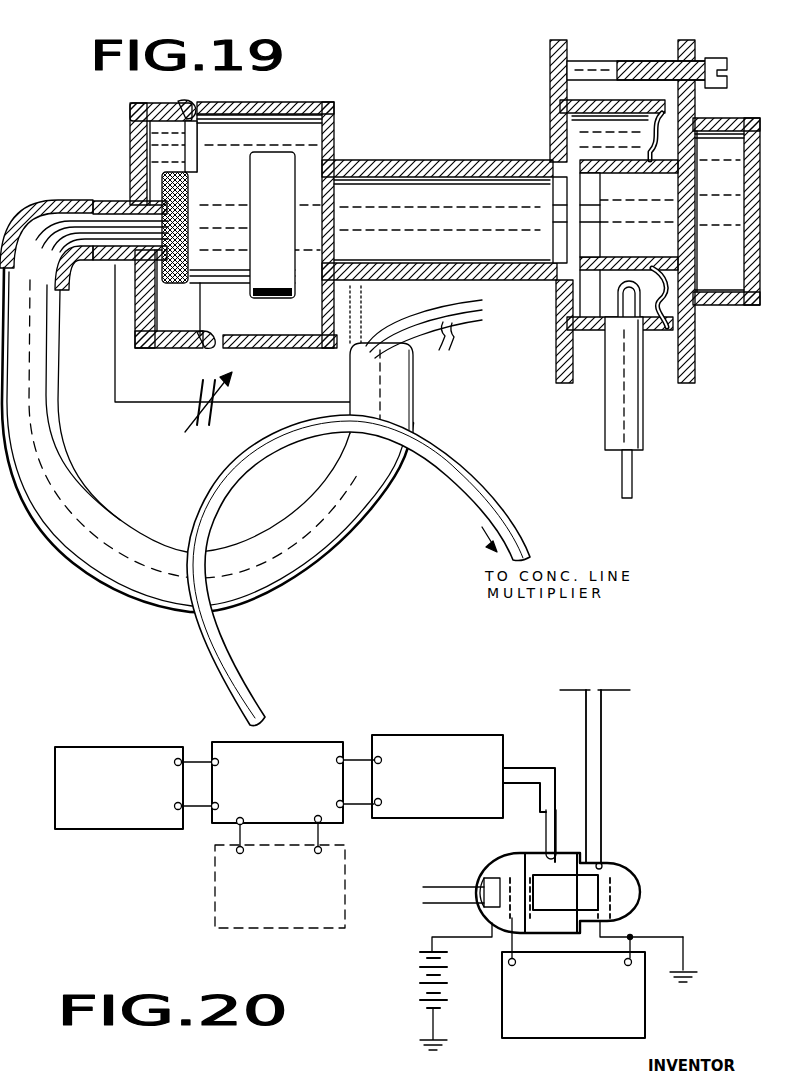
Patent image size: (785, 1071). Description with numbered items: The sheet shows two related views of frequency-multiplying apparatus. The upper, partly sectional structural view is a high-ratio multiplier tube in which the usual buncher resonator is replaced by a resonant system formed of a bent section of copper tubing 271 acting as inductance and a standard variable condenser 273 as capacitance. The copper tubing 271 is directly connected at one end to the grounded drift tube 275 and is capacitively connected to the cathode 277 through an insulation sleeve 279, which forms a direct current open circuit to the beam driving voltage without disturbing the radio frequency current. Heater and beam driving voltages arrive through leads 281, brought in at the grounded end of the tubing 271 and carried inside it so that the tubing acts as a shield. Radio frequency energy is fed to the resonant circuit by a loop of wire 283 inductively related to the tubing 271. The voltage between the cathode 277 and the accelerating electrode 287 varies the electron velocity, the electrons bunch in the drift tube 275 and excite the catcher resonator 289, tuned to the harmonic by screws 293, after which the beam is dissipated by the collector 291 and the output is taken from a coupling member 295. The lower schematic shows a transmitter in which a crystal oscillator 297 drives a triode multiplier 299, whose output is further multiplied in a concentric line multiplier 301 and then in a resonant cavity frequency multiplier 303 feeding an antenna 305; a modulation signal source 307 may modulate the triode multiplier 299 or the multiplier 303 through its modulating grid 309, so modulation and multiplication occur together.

In FIG. 19, the copper tubing 271 is at (88, 555).
In FIG. 19, the variable condenser 273 is at (197, 405).
In FIG. 19, the drift tube 275 is at (391, 158).
In FIG. 19, the cathode 277 is at (277, 148).
In FIG. 19, the insulation sleeve 279 is at (84, 223).
In FIG. 19, the leads 281 is at (424, 335).
In FIG. 19, the loop of wire 283 is at (217, 643).
In FIG. 19, the accelerating electrode 287 is at (335, 112).
In FIG. 19, the catcher resonator 289 is at (605, 70).
In FIG. 19, the collector 291 is at (742, 227).
In FIG. 19, the screws 293 is at (713, 58).
In FIG. 19, the coupling member 295 is at (645, 400).
In FIG. 20, the crystal oscillator 297 is at (108, 745).
In FIG. 20, the triode multiplier 299 is at (314, 736).
In FIG. 20, the concentric line multiplier 301 is at (425, 732).
In FIG. 20, the resonant cavity frequency multiplier 303 is at (508, 852).
In FIG. 20, the antenna 305 is at (617, 688).
In FIG. 20, the modulation signal source 307 is at (345, 878).
In FIG. 20, the modulating grid 309 is at (492, 923).